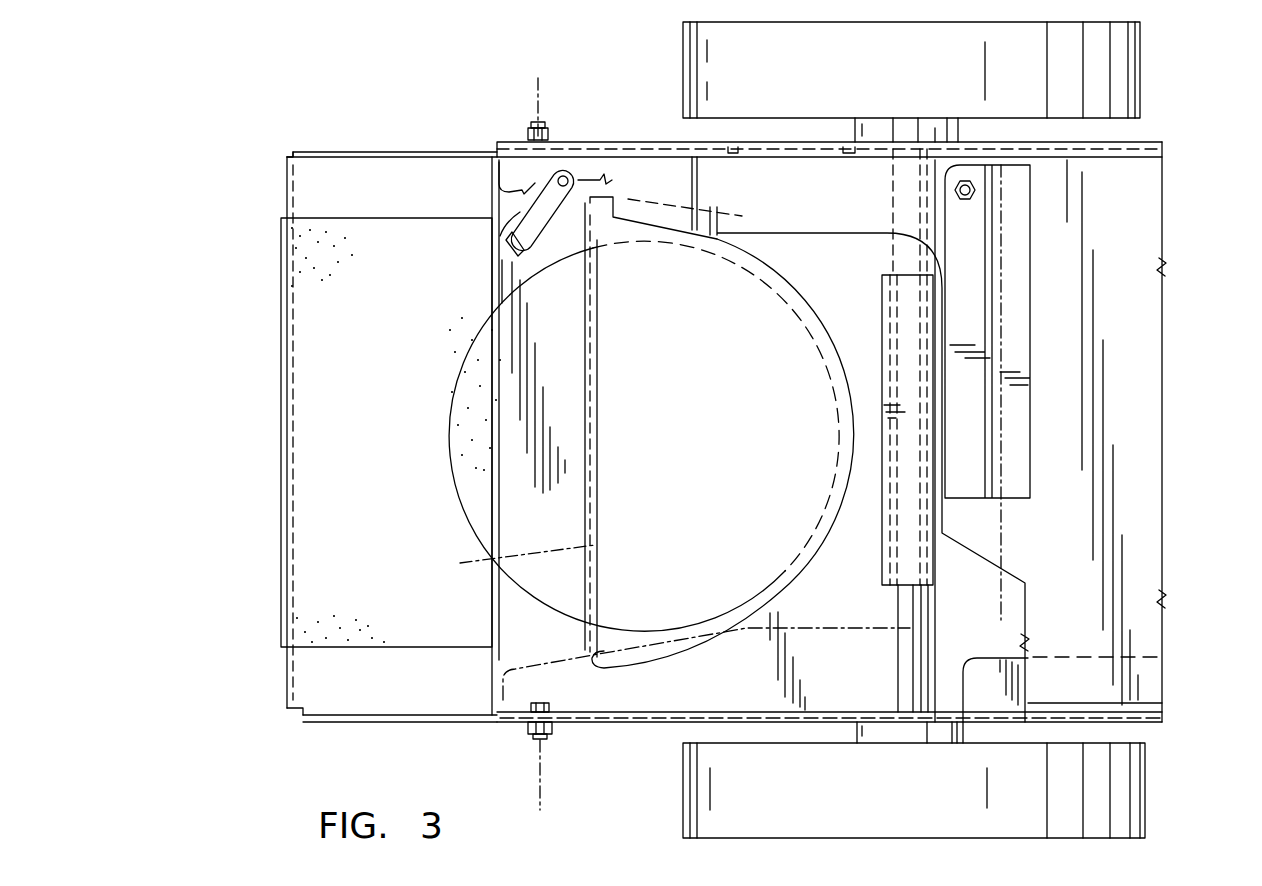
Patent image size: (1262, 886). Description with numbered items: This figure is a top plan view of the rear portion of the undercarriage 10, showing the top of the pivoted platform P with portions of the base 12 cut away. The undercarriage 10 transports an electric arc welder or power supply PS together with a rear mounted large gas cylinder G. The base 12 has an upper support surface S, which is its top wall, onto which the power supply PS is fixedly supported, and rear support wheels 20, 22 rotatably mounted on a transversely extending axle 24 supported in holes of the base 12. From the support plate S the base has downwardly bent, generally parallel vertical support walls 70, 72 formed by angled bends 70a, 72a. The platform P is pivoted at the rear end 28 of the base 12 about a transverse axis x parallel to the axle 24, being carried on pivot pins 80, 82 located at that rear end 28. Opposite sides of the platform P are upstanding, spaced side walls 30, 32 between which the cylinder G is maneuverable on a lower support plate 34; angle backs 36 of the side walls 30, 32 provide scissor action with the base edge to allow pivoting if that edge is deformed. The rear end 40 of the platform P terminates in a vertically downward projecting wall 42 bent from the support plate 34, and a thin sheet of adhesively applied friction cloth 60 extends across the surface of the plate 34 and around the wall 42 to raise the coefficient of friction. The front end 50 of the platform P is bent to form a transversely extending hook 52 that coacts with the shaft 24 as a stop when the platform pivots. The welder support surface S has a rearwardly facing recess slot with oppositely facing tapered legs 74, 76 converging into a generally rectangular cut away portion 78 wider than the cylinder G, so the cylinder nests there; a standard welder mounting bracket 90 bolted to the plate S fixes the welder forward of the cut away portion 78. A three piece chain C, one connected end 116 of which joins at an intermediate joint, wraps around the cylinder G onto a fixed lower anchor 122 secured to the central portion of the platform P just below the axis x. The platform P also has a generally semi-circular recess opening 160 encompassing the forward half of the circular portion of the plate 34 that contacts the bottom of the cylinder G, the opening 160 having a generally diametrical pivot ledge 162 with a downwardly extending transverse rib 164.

The undercarriage 10 is at (1163, 116).
The base 12 is at (762, 160).
The rear support wheel 20 is at (690, 822).
The rear support wheel 22 is at (683, 42).
The axle 24 is at (908, 602).
The rear end of base 28 is at (618, 726).
The side wall 30 is at (448, 722).
The side wall 32 is at (357, 152).
The lower support plate 34 is at (403, 687).
The angle back 36 is at (880, 713).
The rear end of platform 40 is at (292, 150).
The vertically downward projecting wall 42 is at (285, 183).
The front end of platform 50 is at (937, 630).
The hook 52 is at (887, 388).
The friction cloth 60 is at (307, 393).
The vertical support wall 70 is at (658, 727).
The angled bend 70a is at (1135, 713).
The vertical support wall 72 is at (603, 140).
The angled bend 72a is at (677, 143).
The tapered leg 74 is at (687, 632).
The tapered leg 76 is at (675, 232).
The cut away portion 78 is at (853, 238).
The pivot pin 80 is at (552, 740).
The pivot pin 82 is at (518, 128).
The welder mounting bracket 90 is at (972, 240).
The connected end of chain 116 is at (550, 187).
The fixed lower anchor 122 is at (612, 180).
The recess opening 160 is at (813, 312).
The pivot ledge 162 is at (598, 410).
The transverse rib 164 is at (503, 562).
The chain C is at (518, 210).
The gas cylinder G is at (467, 498).
The pivoted platform P is at (287, 685).
The power supply PS is at (1003, 303).
The upper support surface S is at (862, 180).
The transverse axis x is at (535, 88).